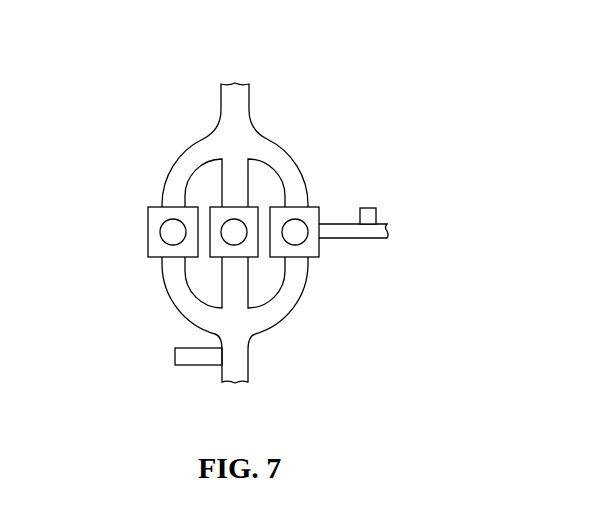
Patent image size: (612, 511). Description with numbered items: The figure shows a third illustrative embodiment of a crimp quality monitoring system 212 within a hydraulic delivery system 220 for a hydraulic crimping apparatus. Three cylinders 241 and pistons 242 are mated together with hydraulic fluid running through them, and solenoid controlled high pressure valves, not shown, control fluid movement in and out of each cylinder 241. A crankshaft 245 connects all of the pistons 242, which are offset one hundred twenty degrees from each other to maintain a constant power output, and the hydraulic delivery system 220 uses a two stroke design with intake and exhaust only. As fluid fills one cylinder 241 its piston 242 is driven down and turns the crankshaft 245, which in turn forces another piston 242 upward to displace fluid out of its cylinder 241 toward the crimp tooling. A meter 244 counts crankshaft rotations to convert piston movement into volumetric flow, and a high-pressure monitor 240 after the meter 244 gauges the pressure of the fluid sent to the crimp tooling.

The crimp quality monitoring system 212 is at (358, 106).
The hydraulic delivery system 220 is at (221, 92).
The high-pressure monitor 240 is at (175, 352).
The cylinder 241 is at (327, 212).
The piston 242 is at (305, 241).
The meter 244 is at (376, 215).
The crankshaft 245 is at (352, 238).